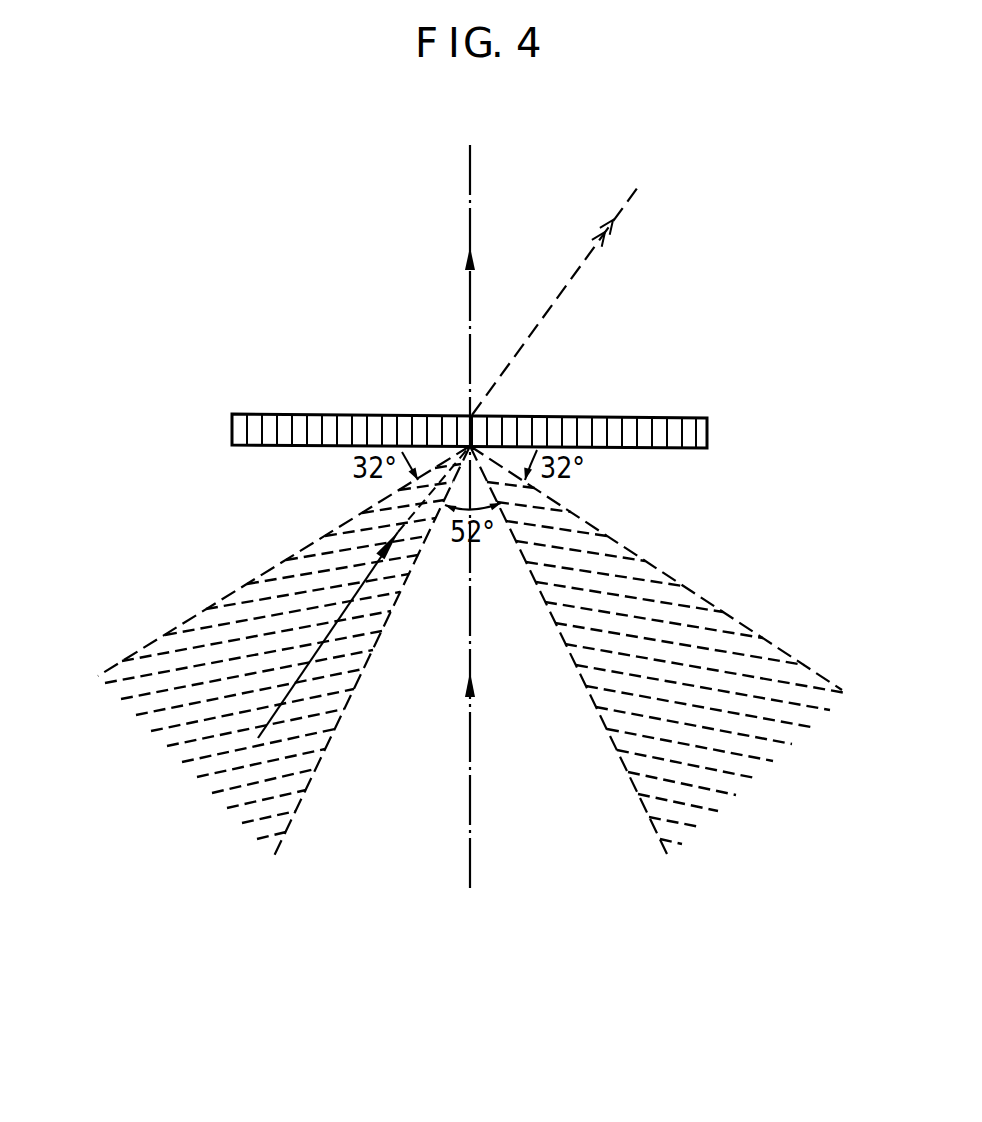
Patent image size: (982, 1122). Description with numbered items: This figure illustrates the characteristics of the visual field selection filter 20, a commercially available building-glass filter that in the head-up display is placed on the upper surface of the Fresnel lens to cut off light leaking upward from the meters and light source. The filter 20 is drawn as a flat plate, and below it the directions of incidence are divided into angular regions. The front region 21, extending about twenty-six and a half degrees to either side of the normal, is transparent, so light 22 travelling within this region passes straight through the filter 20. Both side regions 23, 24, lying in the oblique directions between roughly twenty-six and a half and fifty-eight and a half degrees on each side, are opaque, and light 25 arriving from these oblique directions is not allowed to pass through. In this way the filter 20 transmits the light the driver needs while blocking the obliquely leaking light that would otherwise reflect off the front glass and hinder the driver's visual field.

The visual field selection filter 20 is at (707, 431).
The front region 21 is at (622, 908).
The light 22 is at (468, 187).
The side region 23 is at (222, 877).
The side region 24 is at (887, 885).
The light 25 is at (303, 670).